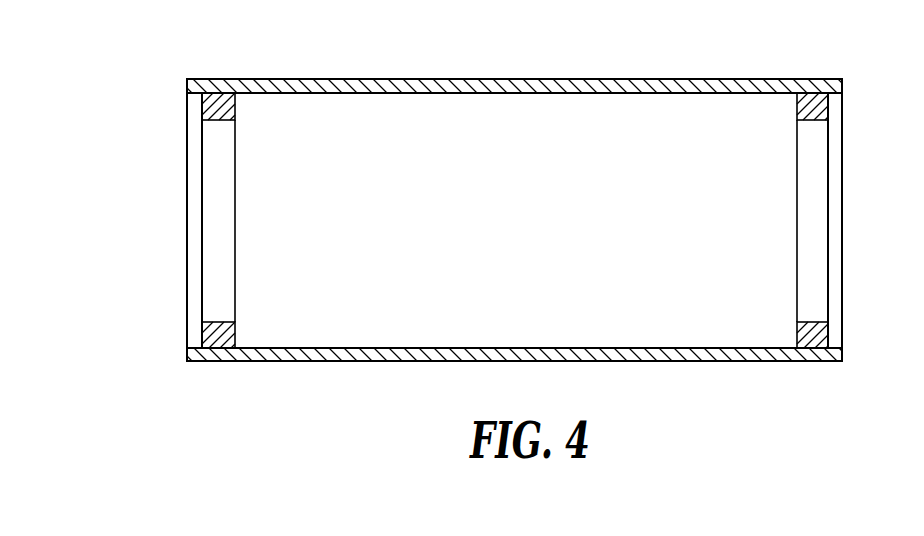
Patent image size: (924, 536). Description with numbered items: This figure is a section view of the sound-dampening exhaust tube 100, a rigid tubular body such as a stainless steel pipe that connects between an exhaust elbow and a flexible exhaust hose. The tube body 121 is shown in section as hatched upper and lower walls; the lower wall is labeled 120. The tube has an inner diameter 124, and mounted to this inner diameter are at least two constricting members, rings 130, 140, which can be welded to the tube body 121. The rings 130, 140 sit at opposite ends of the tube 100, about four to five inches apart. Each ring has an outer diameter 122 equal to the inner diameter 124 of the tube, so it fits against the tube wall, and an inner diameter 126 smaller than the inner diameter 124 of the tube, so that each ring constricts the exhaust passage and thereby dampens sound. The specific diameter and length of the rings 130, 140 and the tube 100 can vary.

The exhaust tube 100 is at (514, 79).
The bottom plate 120 is at (633, 352).
The tube body 121 is at (643, 86).
The outer diameter 122 is at (226, 103).
The inner diameter 124 is at (363, 92).
The inner diameter 126 is at (220, 322).
The ring 130 is at (212, 203).
The ring 140 is at (818, 205).